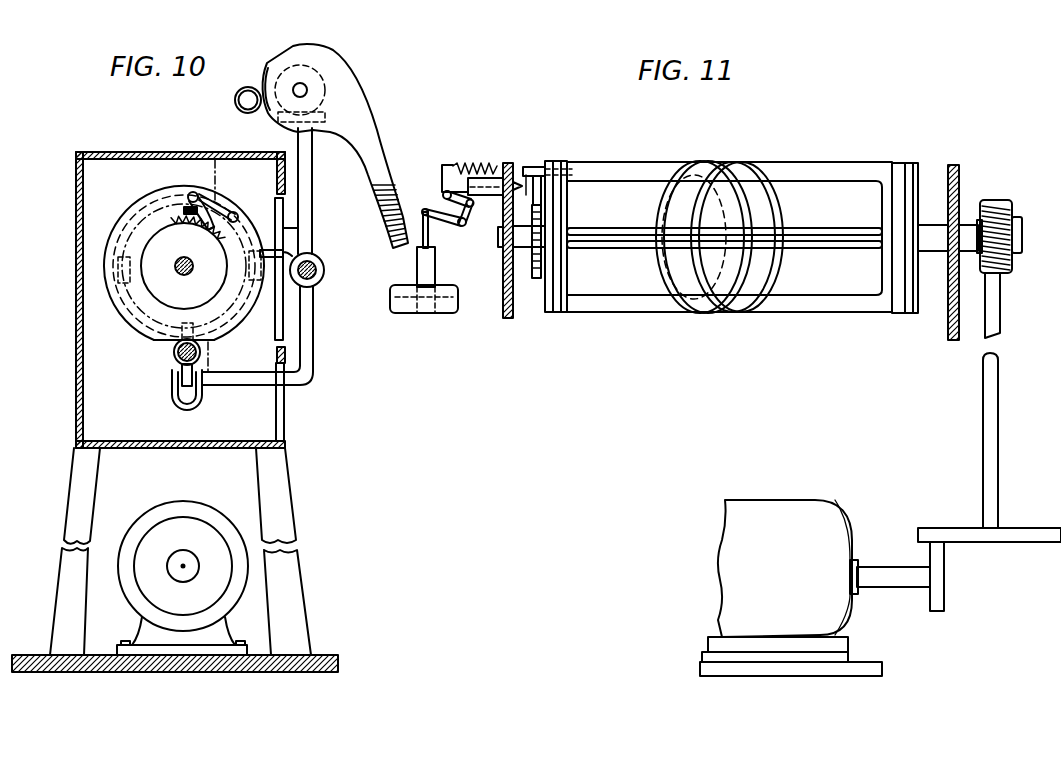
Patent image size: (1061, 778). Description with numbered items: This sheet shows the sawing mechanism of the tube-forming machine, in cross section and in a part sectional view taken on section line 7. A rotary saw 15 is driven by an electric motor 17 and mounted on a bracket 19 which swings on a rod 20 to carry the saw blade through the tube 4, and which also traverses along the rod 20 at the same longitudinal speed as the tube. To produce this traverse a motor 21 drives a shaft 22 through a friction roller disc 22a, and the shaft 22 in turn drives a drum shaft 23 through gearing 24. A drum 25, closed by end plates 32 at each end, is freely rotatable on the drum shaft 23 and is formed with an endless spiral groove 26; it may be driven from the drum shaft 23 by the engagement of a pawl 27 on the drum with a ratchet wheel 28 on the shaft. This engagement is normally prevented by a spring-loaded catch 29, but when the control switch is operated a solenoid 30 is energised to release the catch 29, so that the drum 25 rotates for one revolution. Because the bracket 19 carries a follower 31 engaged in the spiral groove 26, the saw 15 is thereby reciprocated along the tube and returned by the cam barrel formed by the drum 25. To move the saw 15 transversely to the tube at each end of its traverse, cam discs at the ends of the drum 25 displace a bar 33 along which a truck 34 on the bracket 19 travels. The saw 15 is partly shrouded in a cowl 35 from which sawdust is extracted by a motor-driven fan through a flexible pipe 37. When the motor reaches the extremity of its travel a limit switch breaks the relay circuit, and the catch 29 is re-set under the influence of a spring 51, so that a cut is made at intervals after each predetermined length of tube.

In FIG. 10, the tube 4 is at (234, 100).
In FIG. 10, the section line 7 is at (222, 183).
In FIG. 10, the rotary saw 15 is at (262, 84).
In FIG. 10, the electric motor 17 is at (326, 82).
In FIG. 10, the bracket 19 is at (312, 184).
In FIG. 10, the rod 20 is at (324, 270).
In FIG. 10, the motor 21 is at (178, 533).
In FIG. 11, the motor 21 is at (735, 614).
In FIG. 11, the shaft 22 is at (995, 329).
In FIG. 11, the friction roller disc 22a is at (952, 548).
In FIG. 10, the drum shaft 23 is at (180, 271).
In FIG. 11, the drum shaft 23 is at (522, 240).
In FIG. 11, the gearing 24 is at (1013, 263).
In FIG. 10, the drum 25 is at (136, 330).
In FIG. 11, the drum 25 is at (850, 168).
In FIG. 11, the endless spiral groove 26 is at (755, 215).
In FIG. 10, the pawl 27 is at (200, 224).
In FIG. 11, the pawl 27 is at (541, 169).
In FIG. 10, the ratchet wheel 28 is at (175, 237).
In FIG. 11, the ratchet wheel 28 is at (542, 235).
In FIG. 10, the spring-loaded catch 29 is at (186, 208).
In FIG. 11, the spring-loaded catch 29 is at (526, 180).
In FIG. 11, the solenoid 30 is at (395, 299).
In FIG. 10, the follower 31 is at (312, 242).
In FIG. 10, the end plate 32 is at (147, 338).
In FIG. 11, the end plate 32 is at (553, 315).
In FIG. 10, the bar 33 is at (176, 358).
In FIG. 10, the truck 34 is at (176, 393).
In FIG. 10, the cowl 35 is at (332, 50).
In FIG. 10, the flexible pipe 37 is at (395, 198).
In FIG. 11, the spring 51 is at (495, 162).